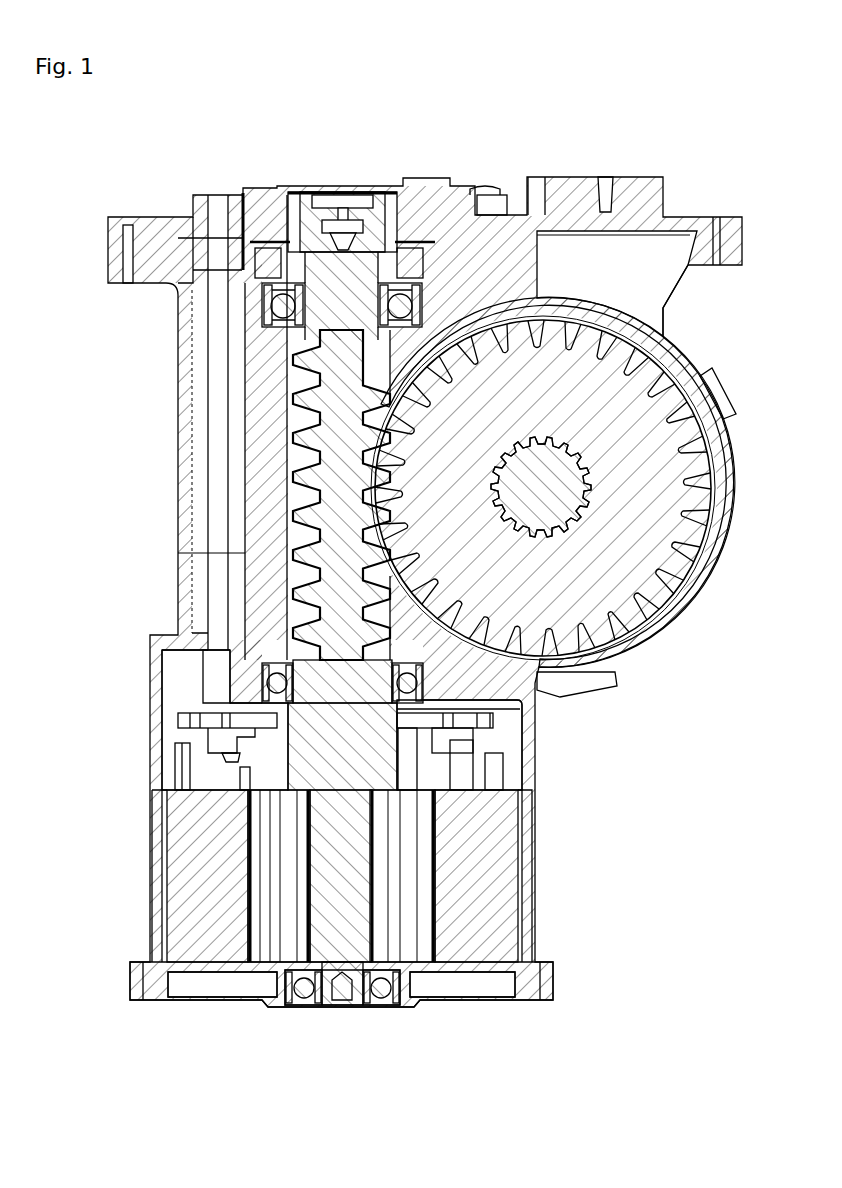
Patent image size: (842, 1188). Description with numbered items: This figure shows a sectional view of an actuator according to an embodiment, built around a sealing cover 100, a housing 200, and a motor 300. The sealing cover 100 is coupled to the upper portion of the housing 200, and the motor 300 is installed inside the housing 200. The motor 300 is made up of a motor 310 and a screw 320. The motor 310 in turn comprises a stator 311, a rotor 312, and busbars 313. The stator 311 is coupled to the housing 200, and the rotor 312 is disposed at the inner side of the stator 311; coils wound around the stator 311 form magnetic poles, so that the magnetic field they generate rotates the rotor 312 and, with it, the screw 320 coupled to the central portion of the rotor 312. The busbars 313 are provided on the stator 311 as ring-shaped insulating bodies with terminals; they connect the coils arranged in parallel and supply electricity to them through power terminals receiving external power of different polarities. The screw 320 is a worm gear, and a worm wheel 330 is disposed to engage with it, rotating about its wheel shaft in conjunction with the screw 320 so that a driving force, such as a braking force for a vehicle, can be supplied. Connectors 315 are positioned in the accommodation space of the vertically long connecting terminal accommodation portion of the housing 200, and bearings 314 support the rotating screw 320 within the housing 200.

The sealing cover 100 is at (257, 160).
The housing 200 is at (150, 497).
The motor 300 is at (411, 598).
The motor 310 is at (454, 837).
The stator 311 is at (480, 903).
The rotor 312 is at (411, 855).
The busbars 313 is at (404, 752).
The bearing 314 is at (268, 304).
The connectors 315 is at (208, 445).
The screw 320 is at (240, 755).
The worm wheel 330 is at (667, 578).